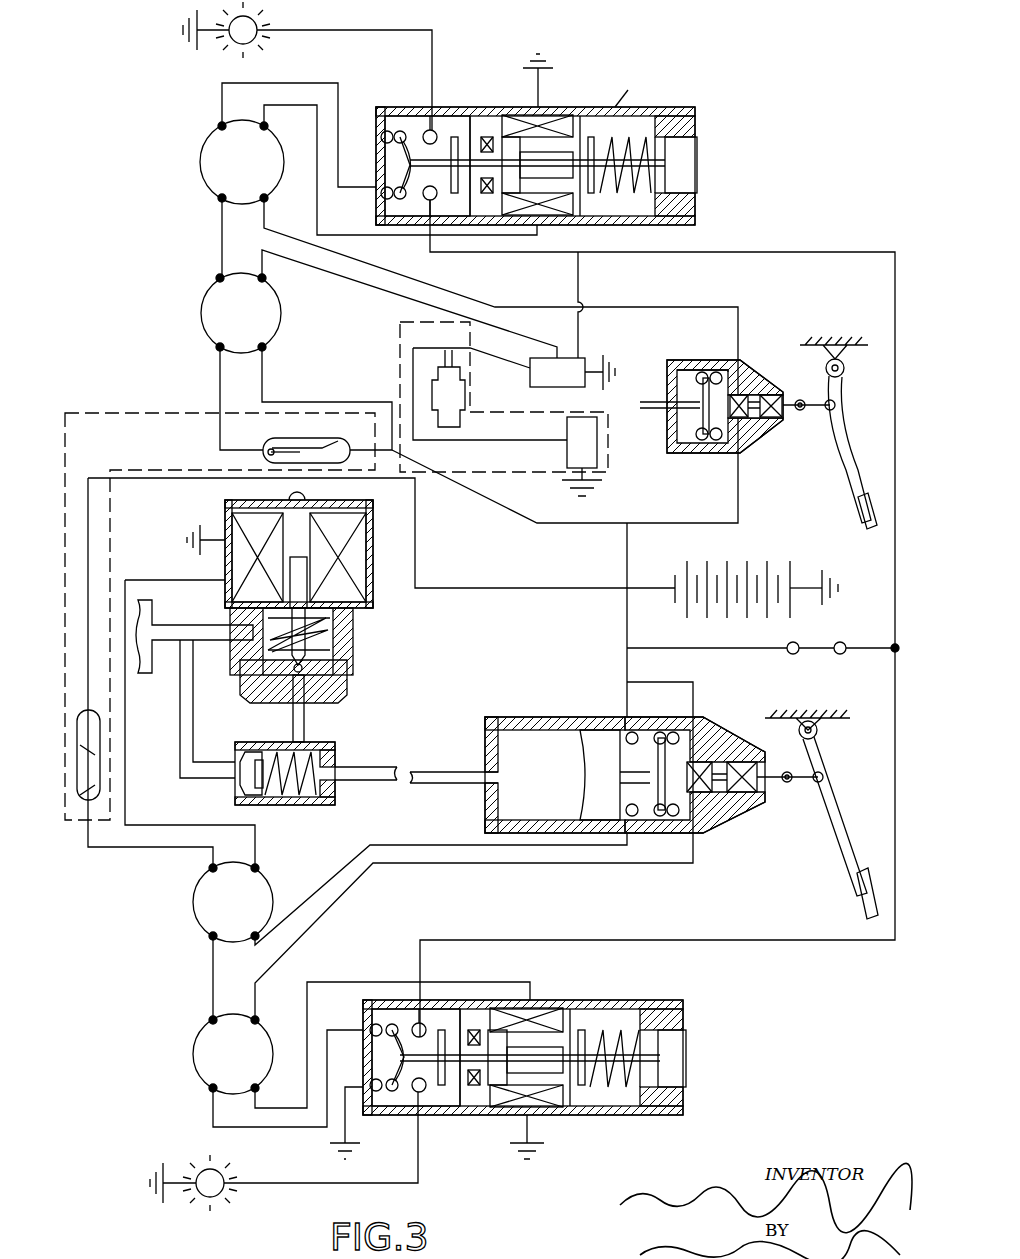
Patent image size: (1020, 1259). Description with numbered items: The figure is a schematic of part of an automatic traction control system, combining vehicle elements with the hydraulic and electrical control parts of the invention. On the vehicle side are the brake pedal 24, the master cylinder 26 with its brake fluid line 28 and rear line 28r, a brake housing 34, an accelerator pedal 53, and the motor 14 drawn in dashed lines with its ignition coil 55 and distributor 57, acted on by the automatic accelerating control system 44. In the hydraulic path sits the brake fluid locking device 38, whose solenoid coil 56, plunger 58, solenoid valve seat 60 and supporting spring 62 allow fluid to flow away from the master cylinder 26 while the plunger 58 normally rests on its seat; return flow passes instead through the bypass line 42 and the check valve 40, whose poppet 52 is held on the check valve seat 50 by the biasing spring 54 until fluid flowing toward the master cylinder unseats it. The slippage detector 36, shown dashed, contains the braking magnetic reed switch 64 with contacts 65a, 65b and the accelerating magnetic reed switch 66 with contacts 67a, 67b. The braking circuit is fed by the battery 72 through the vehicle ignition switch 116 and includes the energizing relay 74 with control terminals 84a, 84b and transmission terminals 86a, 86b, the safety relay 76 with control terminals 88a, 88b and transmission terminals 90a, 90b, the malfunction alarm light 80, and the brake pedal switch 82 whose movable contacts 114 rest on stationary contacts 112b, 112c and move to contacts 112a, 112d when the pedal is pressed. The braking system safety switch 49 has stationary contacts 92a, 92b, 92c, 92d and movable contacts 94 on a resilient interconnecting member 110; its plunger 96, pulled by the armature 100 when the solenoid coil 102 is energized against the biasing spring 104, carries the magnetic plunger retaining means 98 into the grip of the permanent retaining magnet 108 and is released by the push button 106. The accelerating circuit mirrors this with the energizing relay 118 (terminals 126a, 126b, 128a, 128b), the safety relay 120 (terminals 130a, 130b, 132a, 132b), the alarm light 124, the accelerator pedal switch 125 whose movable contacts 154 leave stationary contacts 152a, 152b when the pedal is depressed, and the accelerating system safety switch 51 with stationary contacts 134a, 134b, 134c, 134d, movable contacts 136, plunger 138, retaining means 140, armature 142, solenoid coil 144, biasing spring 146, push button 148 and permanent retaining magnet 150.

The motor 14 is at (400, 372).
The brake pedal 24 is at (842, 850).
The master cylinder 26 is at (520, 715).
The brake fluid line 28 is at (350, 783).
The rear brake-fluid line 28r is at (414, 786).
The brake housing 34 is at (151, 612).
The slippage detector 36 is at (88, 418).
The brake fluid locking device 38 is at (378, 600).
The check valve 40 is at (318, 748).
The bypass line 42 is at (193, 702).
The automatic accelerating control system 44 is at (530, 365).
The braking system safety switch 49 is at (578, 1110).
The check valve seat 50 is at (242, 760).
The accelerating system safety switch 51 is at (622, 106).
The check valve poppet 52 is at (250, 783).
The accelerator pedal 53 is at (845, 470).
The check valve biasing spring 54 is at (290, 796).
The ignition coil 55 is at (462, 393).
The solenoid coil 56 is at (240, 530).
The distributor 57 is at (598, 455).
The plunger 58 is at (333, 633).
The solenoid valve seat 60 is at (305, 668).
The solenoid valve supporting spring 62 is at (336, 650).
The braking magnetic reed switch 64 is at (77, 730).
The contact 65a is at (92, 753).
The contact 65b is at (92, 790).
The accelerating magnetic reed switch 66 is at (300, 440).
The contact 67a is at (280, 447).
The contact 67b is at (268, 453).
The voltage source 72 is at (735, 560).
The energizing relay 74 is at (198, 895).
The safety relay 76 is at (198, 1040).
The malfunction alarm light 80 is at (226, 1177).
The brake pedal switch 82 is at (668, 730).
The control terminal 84a is at (210, 868).
The control terminal 84b is at (210, 937).
The transmission terminal 86a is at (257, 868).
The transmission terminal 86b is at (255, 940).
The control terminal 88a is at (212, 1017).
The control terminal 88b is at (210, 1089).
The transmission terminal 90a is at (257, 1018).
The transmission terminal 90b is at (258, 1089).
The stationary contact 92a is at (370, 1028).
The stationary contact 92b is at (425, 1025).
The stationary contact 92c is at (416, 1094).
The stationary contact 92d is at (372, 1082).
The movable contacts 94 is at (404, 1070).
The plunger 96 is at (574, 1055).
The magnetic plunger retaining means 98 is at (445, 1090).
The armature 100 is at (497, 1040).
The solenoid coil 102 is at (540, 1008).
The biasing spring 104 is at (607, 1030).
The push button 106 is at (700, 1050).
The permanent retaining magnet 108 is at (472, 1086).
The interconnecting member 110 is at (410, 990).
The stationary contact 112a is at (634, 732).
The stationary contact 112b is at (676, 734).
The stationary contact 112c is at (676, 818).
The stationary contact 112d is at (633, 818).
The movable contacts 114 is at (661, 770).
The vehicle ignition switch 116 is at (796, 655).
The energizing relay 118 is at (203, 295).
The safety relay 120 is at (205, 150).
The malfunction alarm light 124 is at (258, 40).
The accelerator pedal switch 125 is at (720, 353).
The control terminal 126a is at (219, 346).
The control terminal 126b is at (220, 275).
The transmission terminal 128a is at (266, 279).
The transmission terminal 128b is at (266, 348).
The control terminal 130a is at (220, 197).
The control terminal 130b is at (221, 122).
The transmission terminal 132a is at (264, 128).
The transmission terminal 132b is at (267, 200).
The stationary contact 134a is at (400, 130).
The stationary contact 134b is at (426, 130).
The stationary contact 134c is at (428, 212).
The stationary contact 134d is at (382, 196).
The movable contacts 136 is at (396, 157).
The plunger 138 is at (618, 110).
The magnetic plunger retaining means 140 is at (440, 110).
The armature 142 is at (508, 177).
The solenoid coil 144 is at (560, 115).
The biasing spring 146 is at (632, 122).
The push button 148 is at (700, 150).
The permanent retaining magnet 150 is at (456, 135).
The stationary contact 152a is at (738, 364).
The stationary contact 152b is at (710, 445).
The movable contacts 154 is at (700, 372).